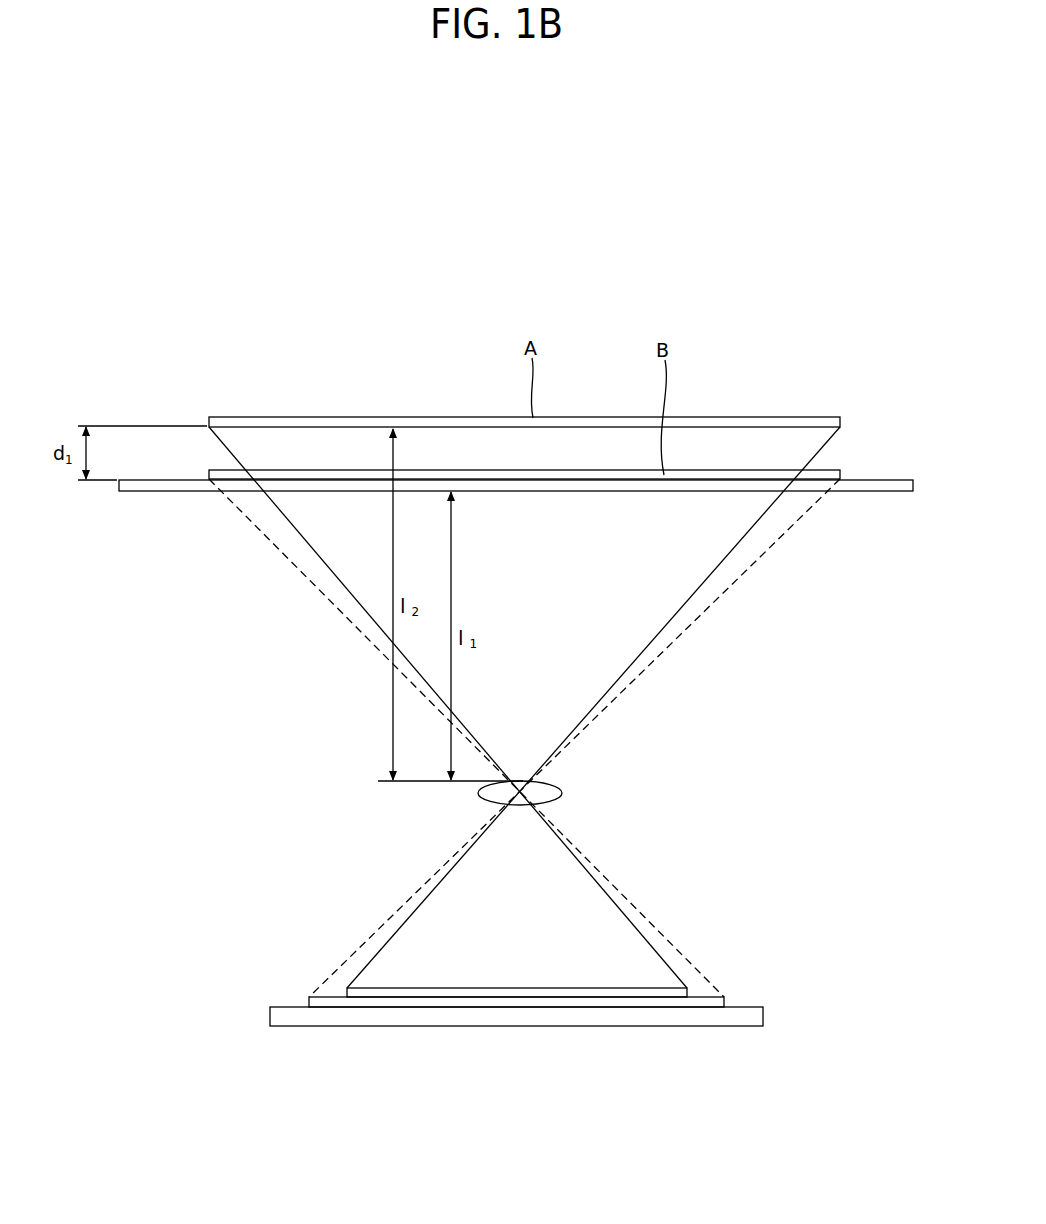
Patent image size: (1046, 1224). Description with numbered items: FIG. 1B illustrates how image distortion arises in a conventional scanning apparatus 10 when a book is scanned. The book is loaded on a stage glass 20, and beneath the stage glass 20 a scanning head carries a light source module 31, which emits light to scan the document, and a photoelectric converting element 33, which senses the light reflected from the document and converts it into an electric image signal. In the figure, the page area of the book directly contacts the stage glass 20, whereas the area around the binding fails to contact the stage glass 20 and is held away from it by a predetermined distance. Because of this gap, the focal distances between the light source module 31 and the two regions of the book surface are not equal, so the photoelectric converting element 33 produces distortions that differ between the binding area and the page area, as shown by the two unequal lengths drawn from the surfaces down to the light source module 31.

The scanning apparatus 10 is at (846, 339).
The stage glass 20 is at (165, 492).
The light source module 31 is at (562, 792).
The photoelectric converting element 33 is at (702, 1007).